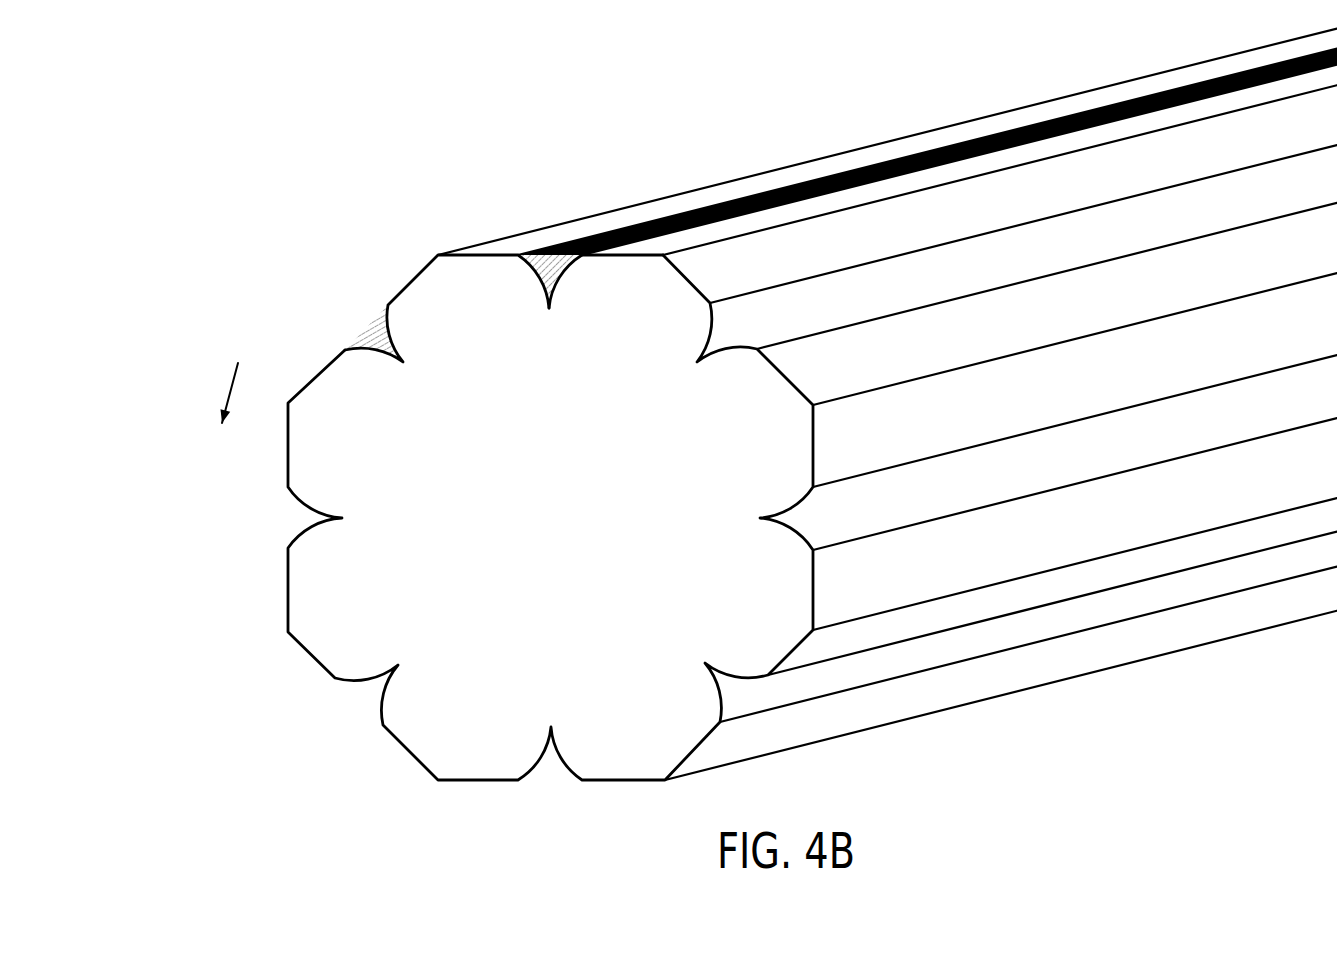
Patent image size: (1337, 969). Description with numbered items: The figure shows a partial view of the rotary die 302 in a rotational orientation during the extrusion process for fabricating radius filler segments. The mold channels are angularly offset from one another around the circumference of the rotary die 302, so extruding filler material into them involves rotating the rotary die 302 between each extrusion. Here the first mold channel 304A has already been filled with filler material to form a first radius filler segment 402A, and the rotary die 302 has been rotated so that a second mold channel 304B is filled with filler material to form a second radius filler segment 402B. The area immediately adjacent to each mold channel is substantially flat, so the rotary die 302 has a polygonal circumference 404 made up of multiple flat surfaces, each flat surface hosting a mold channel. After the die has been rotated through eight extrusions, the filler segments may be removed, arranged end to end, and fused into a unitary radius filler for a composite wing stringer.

The rotary die 302 is at (530, 141).
The first mold channel 304A is at (396, 378).
The second mold channel 304B is at (550, 323).
The first radius filler segment 402A is at (357, 318).
The second radius filler segment 402B is at (833, 168).
The polygonal circumference 404 is at (233, 593).